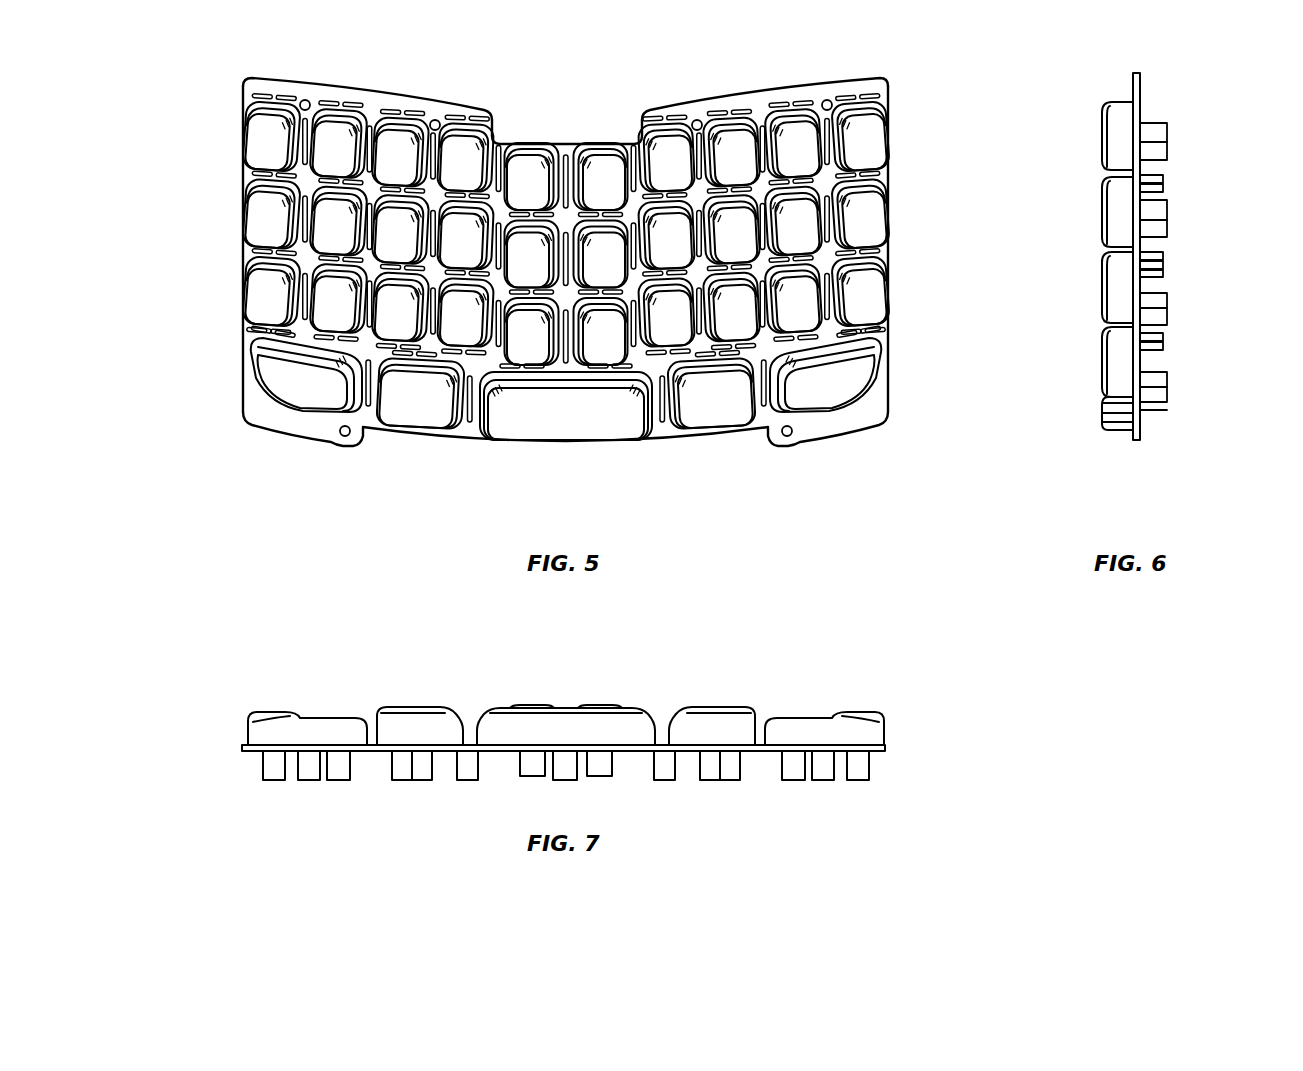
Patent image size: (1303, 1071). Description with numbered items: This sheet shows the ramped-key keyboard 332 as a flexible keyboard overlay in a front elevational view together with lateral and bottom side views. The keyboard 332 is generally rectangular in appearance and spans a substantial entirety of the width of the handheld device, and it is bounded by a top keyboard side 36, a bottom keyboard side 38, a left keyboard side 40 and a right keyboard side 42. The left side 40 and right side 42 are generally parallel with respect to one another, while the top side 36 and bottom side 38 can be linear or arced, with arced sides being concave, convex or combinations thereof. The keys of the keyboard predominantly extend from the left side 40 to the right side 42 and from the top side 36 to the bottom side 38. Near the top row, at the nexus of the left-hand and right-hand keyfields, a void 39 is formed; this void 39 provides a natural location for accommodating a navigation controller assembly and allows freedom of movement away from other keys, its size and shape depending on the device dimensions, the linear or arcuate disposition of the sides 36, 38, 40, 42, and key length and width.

In FIG. 5, the top keyboard side 36 is at (763, 90).
In FIG. 5, the bottom keyboard side 38 is at (414, 446).
In FIG. 5, the void 39 is at (593, 100).
In FIG. 5, the left keyboard side 40 is at (236, 238).
In FIG. 5, the right keyboard side 42 is at (896, 238).
In FIG. 5, the ramped-key keyboard 332 is at (250, 450).
In FIG. 6, the ramped-key keyboard 332 is at (1196, 270).
In FIG. 7, the ramped-key keyboard 332 is at (926, 738).